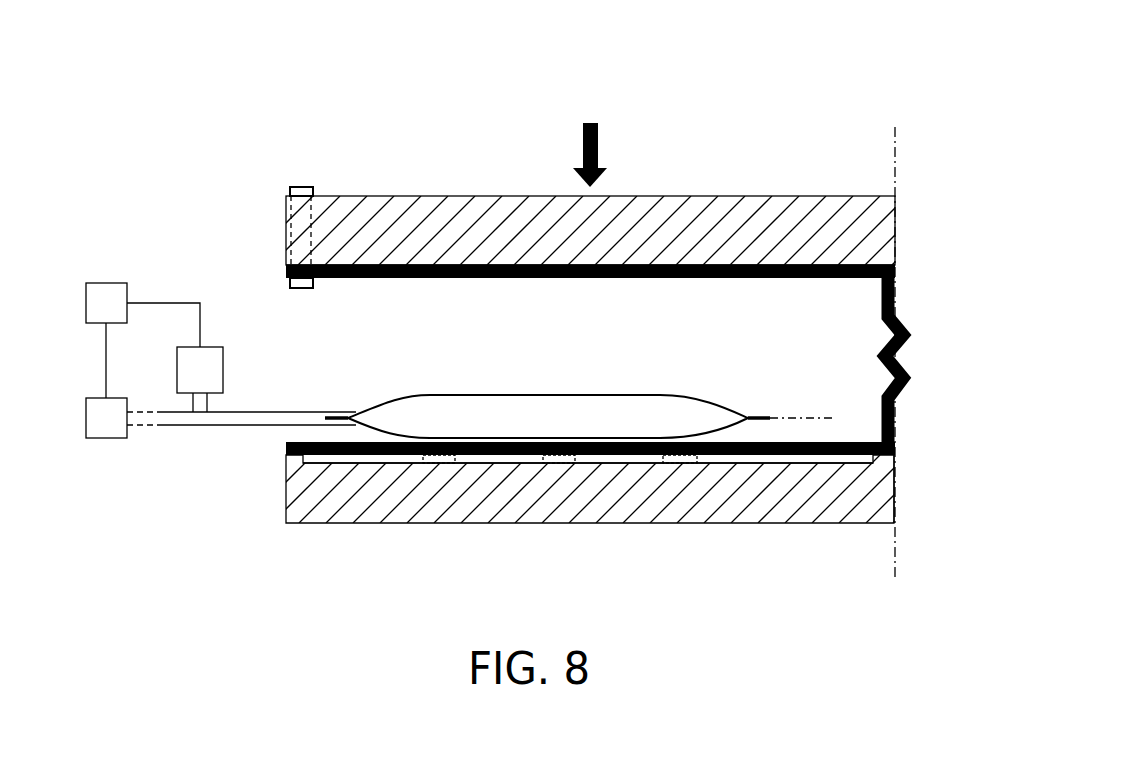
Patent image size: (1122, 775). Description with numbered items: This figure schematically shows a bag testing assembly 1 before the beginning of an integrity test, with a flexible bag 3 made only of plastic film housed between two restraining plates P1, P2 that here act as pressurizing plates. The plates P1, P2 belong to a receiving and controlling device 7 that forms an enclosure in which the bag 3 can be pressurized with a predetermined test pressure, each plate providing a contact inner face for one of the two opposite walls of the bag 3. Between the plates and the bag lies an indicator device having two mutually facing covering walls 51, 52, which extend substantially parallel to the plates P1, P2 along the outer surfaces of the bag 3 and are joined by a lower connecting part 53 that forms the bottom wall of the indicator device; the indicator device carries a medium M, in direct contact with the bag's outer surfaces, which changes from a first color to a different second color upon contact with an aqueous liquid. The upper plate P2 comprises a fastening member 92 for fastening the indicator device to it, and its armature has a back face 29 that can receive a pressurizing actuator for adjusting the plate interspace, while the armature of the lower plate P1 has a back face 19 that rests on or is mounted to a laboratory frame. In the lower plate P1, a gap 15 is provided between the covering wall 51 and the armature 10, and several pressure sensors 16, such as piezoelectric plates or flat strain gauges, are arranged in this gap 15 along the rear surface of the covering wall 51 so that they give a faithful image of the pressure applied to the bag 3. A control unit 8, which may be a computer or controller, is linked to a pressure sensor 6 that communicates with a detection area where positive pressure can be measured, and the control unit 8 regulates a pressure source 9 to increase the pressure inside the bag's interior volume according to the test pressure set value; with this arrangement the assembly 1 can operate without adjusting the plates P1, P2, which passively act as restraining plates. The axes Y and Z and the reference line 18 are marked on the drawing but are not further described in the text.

The bag testing assembly 1 is at (134, 510).
The bag 3 is at (684, 374).
The pressure sensor 6 is at (223, 362).
The receiving and controlling device 7 is at (728, 128).
The control unit 8 is at (97, 282).
The pressure source 9 is at (97, 438).
The armature 10 is at (894, 497).
The gap 15 is at (793, 463).
The pressure sensors 16 is at (680, 464).
The upper plate lower surface 18 is at (760, 265).
The back face 19 is at (388, 523).
The back face 29 is at (422, 195).
The covering wall 51 is at (729, 456).
The covering wall 52 is at (495, 264).
The lower connecting part 53 is at (908, 333).
The fastening member 92 is at (298, 190).
The plate P1 is at (280, 502).
The plate P2 is at (280, 206).
The medium M is at (843, 277).
The axis Y is at (795, 415).
The axis Z is at (907, 349).